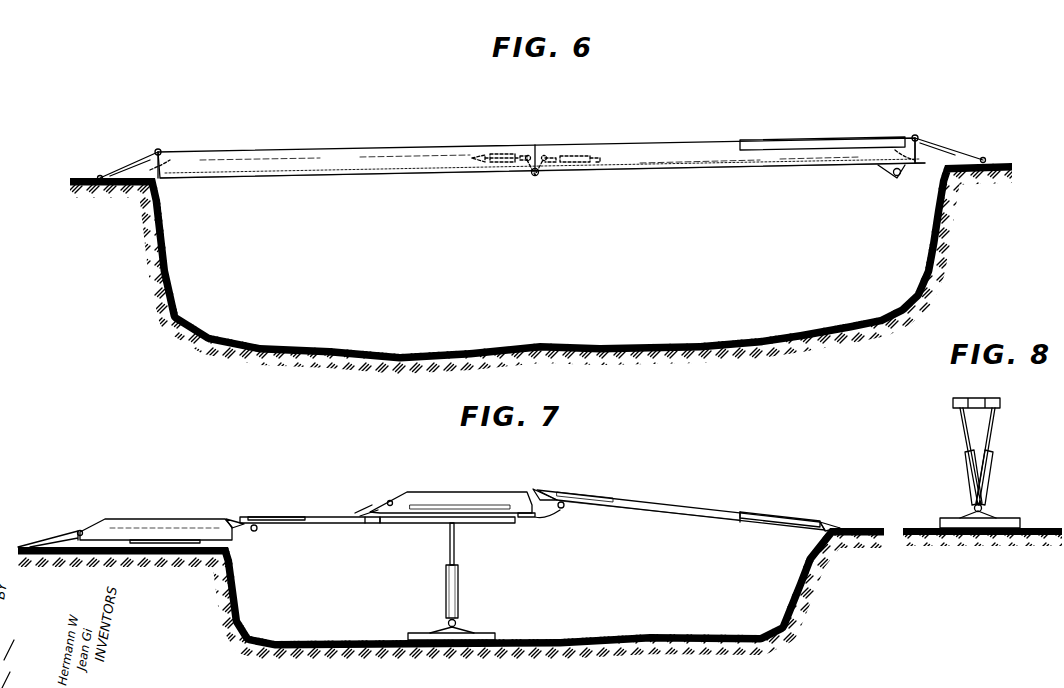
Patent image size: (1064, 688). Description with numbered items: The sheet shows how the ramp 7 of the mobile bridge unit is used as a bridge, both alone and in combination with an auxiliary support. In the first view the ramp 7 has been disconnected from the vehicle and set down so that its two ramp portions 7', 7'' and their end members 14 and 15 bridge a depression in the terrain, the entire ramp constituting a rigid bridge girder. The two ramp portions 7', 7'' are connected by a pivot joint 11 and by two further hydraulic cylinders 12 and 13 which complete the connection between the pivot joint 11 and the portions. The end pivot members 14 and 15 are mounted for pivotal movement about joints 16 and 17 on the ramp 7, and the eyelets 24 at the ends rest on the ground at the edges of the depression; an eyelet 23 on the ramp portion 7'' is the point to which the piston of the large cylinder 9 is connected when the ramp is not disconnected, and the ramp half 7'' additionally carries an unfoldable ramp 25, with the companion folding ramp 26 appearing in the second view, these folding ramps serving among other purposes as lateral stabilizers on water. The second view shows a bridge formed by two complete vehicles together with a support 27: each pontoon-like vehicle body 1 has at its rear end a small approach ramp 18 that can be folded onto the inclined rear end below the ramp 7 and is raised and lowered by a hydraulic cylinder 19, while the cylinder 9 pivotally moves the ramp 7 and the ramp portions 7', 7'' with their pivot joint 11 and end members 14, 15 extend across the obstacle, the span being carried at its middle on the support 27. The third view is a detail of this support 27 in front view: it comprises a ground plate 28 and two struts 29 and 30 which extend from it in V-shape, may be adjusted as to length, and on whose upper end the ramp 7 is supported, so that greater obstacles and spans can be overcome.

In FIG. 7, the vehicle body 1 is at (150, 518).
In FIG. 6, the ramp 7 is at (541, 137).
In FIG. 7, the ramp 7 is at (681, 499).
In FIG. 8, the ramp 7 is at (959, 405).
In FIG. 6, the ramp portion 7' is at (347, 146).
In FIG. 7, the ramp portion 7' is at (600, 511).
In FIG. 6, the ramp portion 7'' is at (730, 133).
In FIG. 7, the ramp portion 7'' is at (490, 510).
In FIG. 7, the cylinder 9 is at (256, 530).
In FIG. 6, the pivot joint 11 is at (538, 180).
In FIG. 7, the pivot joint 11 is at (378, 524).
In FIG. 6, the hydraulic cylinder 12 is at (575, 170).
In FIG. 6, the hydraulic cylinder 13 is at (488, 170).
In FIG. 6, the end pivot member 14 is at (136, 163).
In FIG. 7, the end pivot member 14 is at (523, 518).
In FIG. 6, the end pivot member 15 is at (950, 150).
In FIG. 7, the end pivot member 15 is at (234, 518).
In FIG. 6, the joint 16 is at (162, 149).
In FIG. 6, the joint 17 is at (916, 135).
In FIG. 7, the approach ramp 18 is at (68, 540).
In FIG. 7, the hydraulic cylinder 19 is at (80, 537).
In FIG. 6, the eyelet 23 is at (895, 176).
In FIG. 6, the eyelet 24 is at (100, 175).
In FIG. 6, the unfoldable ramp 25 is at (830, 139).
In FIG. 7, the unfoldable ramp 26 is at (282, 516).
In FIG. 7, the support 27 is at (470, 600).
In FIG. 8, the support 27 is at (993, 434).
In FIG. 7, the ground plate 28 is at (418, 631).
In FIG. 8, the ground plate 28 is at (955, 516).
In FIG. 8, the strut 29 is at (992, 460).
In FIG. 8, the strut 30 is at (966, 460).